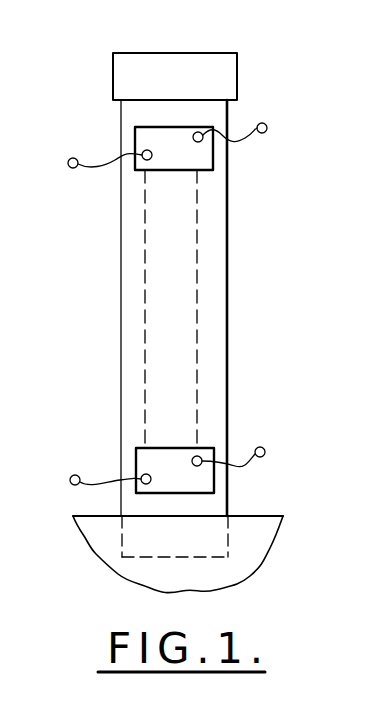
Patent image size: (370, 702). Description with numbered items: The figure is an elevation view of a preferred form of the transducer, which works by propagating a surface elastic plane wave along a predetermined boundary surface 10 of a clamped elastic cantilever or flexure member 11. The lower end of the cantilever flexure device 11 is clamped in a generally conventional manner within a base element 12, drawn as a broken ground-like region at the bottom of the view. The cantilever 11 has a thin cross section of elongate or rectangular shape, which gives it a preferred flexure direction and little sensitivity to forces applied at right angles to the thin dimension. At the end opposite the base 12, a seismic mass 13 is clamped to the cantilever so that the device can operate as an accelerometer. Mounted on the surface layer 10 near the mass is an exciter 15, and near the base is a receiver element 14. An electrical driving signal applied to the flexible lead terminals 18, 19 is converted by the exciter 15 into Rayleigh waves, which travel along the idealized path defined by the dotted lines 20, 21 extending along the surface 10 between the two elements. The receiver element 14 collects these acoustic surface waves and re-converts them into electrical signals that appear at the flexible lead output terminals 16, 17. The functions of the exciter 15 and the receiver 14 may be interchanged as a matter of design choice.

The boundary surface 10 is at (227, 348).
The cantilever flexure member 11 is at (235, 237).
The base element 12 is at (257, 516).
The seismic mass 13 is at (237, 67).
The receiver element 14 is at (185, 448).
The exciter 15 is at (213, 158).
The flexible lead output terminal 16 is at (74, 475).
The flexible lead output terminal 17 is at (265, 450).
The flexible lead terminal 18 is at (73, 158).
The flexible lead terminal 19 is at (265, 124).
The dotted line 20 is at (147, 300).
The dotted line 21 is at (198, 320).